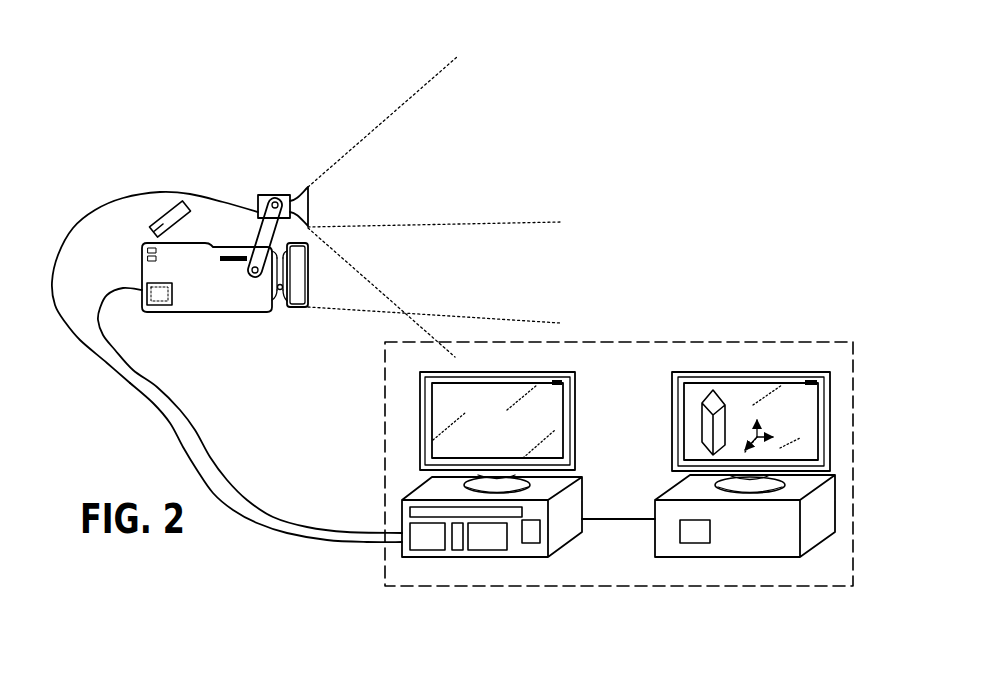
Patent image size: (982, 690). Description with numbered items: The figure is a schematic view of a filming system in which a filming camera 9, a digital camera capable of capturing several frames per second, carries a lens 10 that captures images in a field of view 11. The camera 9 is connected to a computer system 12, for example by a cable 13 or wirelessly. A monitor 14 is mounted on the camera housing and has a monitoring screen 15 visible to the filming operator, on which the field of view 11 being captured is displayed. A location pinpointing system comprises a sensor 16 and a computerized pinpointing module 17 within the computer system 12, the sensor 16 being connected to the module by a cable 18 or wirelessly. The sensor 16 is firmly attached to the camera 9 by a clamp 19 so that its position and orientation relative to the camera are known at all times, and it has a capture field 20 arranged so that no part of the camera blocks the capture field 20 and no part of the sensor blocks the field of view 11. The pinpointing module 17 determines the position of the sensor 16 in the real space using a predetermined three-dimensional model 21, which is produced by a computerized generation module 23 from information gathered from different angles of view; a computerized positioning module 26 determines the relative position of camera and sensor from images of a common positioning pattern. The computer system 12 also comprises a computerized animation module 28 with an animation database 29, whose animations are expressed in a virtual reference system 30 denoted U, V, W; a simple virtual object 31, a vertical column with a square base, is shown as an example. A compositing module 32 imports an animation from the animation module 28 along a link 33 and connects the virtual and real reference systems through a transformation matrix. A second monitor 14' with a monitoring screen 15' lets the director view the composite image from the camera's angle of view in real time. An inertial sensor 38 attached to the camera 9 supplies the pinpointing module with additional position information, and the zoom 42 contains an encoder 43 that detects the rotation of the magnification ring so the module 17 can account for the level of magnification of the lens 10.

The filming camera 9 is at (213, 292).
The lens 10 is at (300, 296).
The field of view 11 is at (438, 286).
The computer system 12 is at (802, 342).
The cable 13 is at (197, 433).
The monitor 14 is at (155, 263).
The monitor 14' is at (525, 430).
The monitoring screen 15 is at (163, 197).
The monitoring screen 15' is at (441, 415).
The sensor 16 is at (263, 240).
The computerized pinpointing module 17 is at (497, 556).
The cable 18 is at (260, 525).
The clamp 19 is at (267, 233).
The capture field 20 is at (357, 220).
The three-dimensional model 21 is at (528, 545).
The computerized generation module 23 is at (425, 556).
The computerized positioning module 26 is at (458, 556).
The computerized animation module 28 is at (757, 556).
The animation database 29 is at (692, 545).
The virtual reference system 30 is at (757, 437).
The virtual object 31 is at (707, 428).
The compositing module 32 is at (407, 508).
The link 33 is at (623, 517).
The inertial sensor 38 is at (168, 305).
The zoom 42 is at (281, 293).
The encoder 43 is at (278, 312).